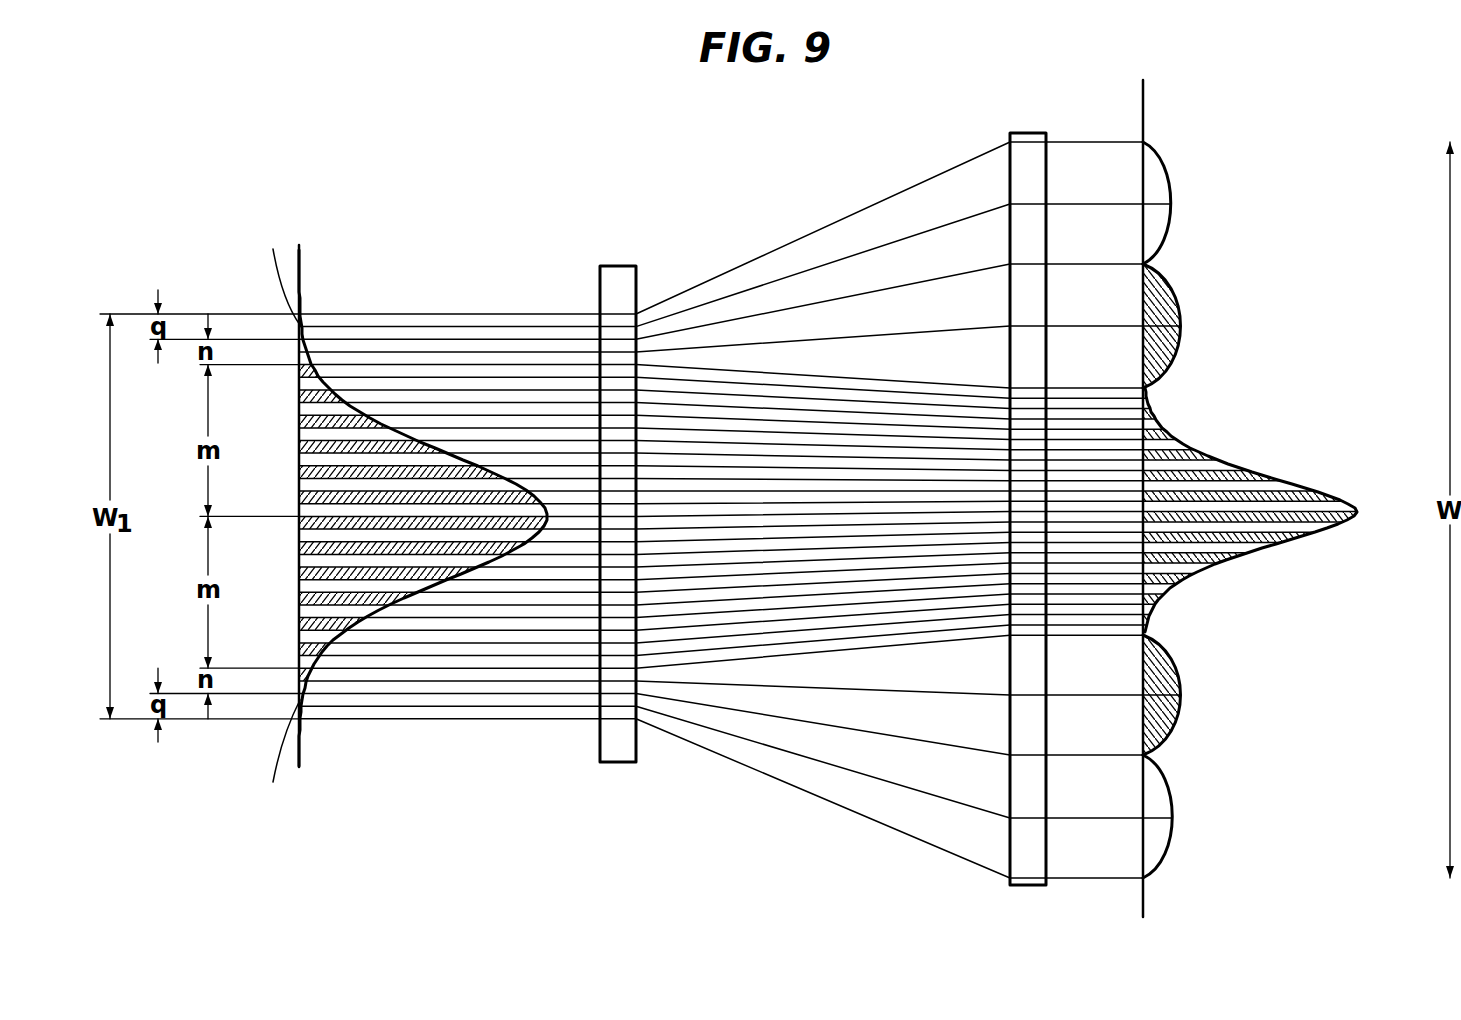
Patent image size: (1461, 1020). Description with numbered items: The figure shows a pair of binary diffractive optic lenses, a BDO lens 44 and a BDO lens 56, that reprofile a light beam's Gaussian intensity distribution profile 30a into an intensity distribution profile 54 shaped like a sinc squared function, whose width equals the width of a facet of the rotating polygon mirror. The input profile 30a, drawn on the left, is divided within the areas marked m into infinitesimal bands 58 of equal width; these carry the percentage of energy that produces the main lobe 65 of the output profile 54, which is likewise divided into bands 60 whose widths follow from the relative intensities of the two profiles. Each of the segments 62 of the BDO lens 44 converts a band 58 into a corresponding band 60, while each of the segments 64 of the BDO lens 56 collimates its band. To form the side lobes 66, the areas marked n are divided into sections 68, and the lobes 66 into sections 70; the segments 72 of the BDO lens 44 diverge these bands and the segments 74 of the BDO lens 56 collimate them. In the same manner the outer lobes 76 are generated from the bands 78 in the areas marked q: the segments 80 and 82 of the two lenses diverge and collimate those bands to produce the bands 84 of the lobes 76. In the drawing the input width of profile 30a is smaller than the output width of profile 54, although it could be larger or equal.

The Gaussian intensity distribution profile 30a is at (447, 435).
The BDO lens 44 is at (617, 266).
The intensity distribution profile 54 is at (1326, 402).
The BDO lens 56 is at (1028, 133).
The bands 58 is at (299, 597).
The bands 60 is at (1141, 556).
The segments 62 is at (630, 535).
The segments 64 is at (1015, 530).
The main lobe 65 is at (1264, 574).
The lobes 66 is at (1173, 297).
The sections 68 is at (296, 358).
The sections 70 is at (1143, 340).
The segments 72 is at (636, 355).
The segments 74 is at (1015, 338).
The lobes 76 is at (1168, 180).
The bands 78 is at (279, 516).
The segments 80 is at (600, 332).
The segments 82 is at (1015, 222).
The bands 84 is at (1143, 212).